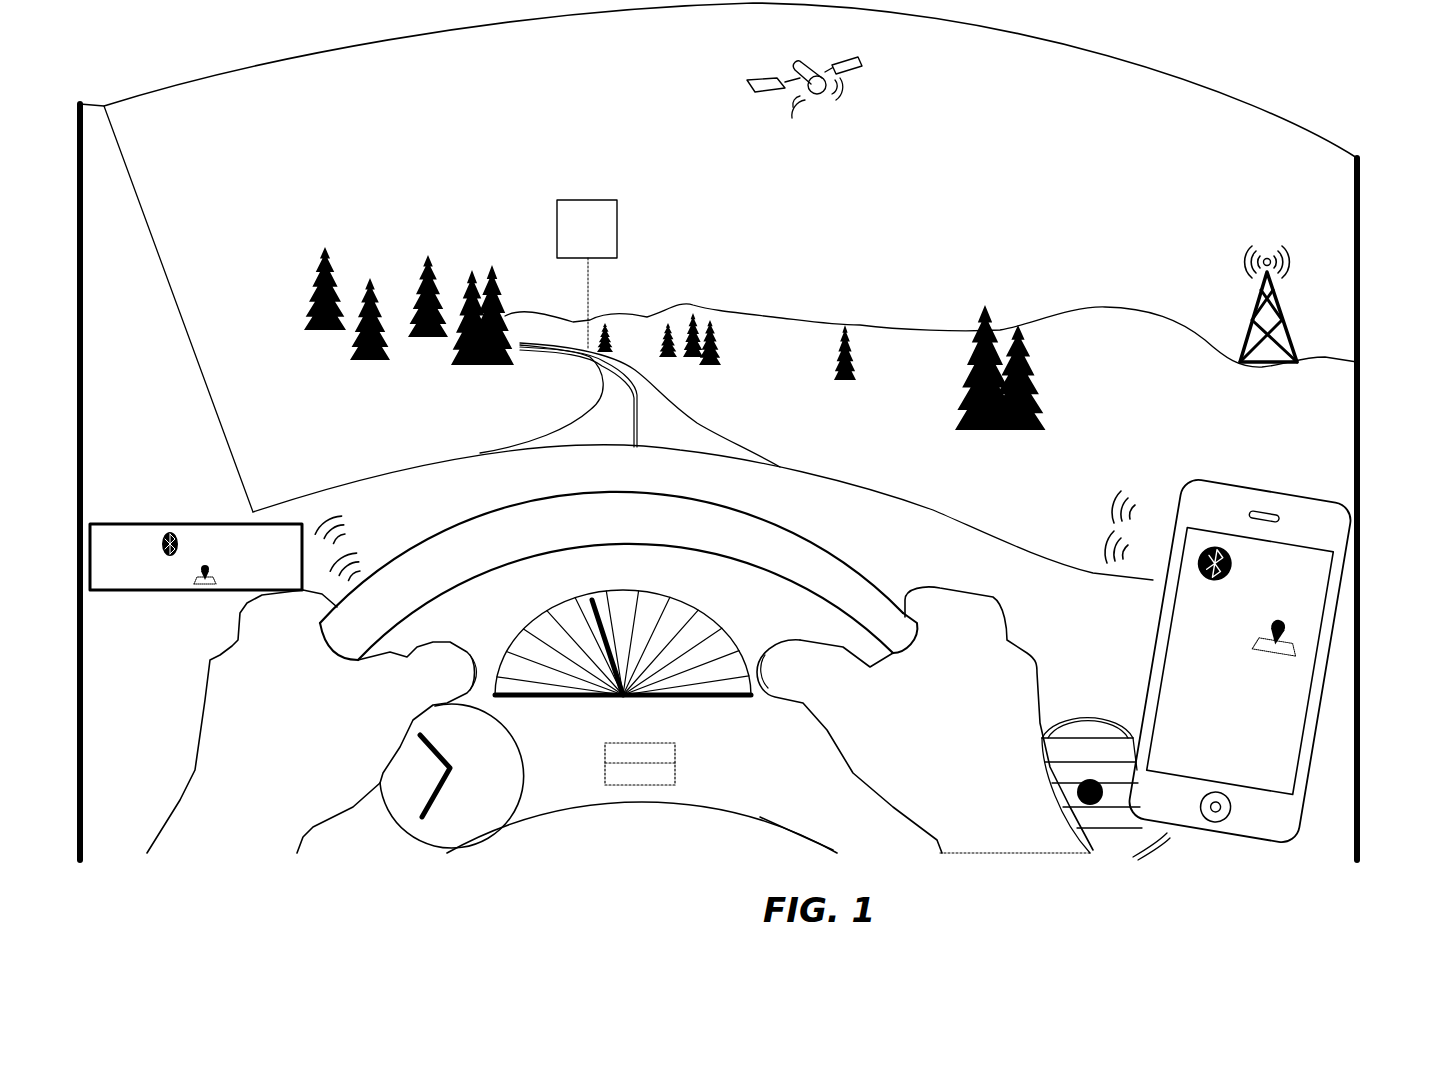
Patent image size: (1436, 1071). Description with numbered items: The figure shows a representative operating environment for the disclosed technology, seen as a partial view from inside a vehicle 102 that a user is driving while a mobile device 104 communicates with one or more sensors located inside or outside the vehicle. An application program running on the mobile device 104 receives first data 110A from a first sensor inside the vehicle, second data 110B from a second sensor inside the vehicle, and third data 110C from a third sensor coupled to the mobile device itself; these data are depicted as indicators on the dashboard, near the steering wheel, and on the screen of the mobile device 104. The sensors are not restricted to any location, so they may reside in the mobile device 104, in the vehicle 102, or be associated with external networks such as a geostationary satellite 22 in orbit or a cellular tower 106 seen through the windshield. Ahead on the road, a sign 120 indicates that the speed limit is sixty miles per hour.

The geostationary satellite 22 is at (797, 68).
The sign 120 is at (617, 225).
The cellular tower 106 is at (1280, 310).
The vehicle 102 is at (693, 512).
The first data 110A is at (196, 557).
The second data 110B is at (672, 750).
The third data 110C is at (1261, 769).
The mobile device 104 is at (1303, 728).